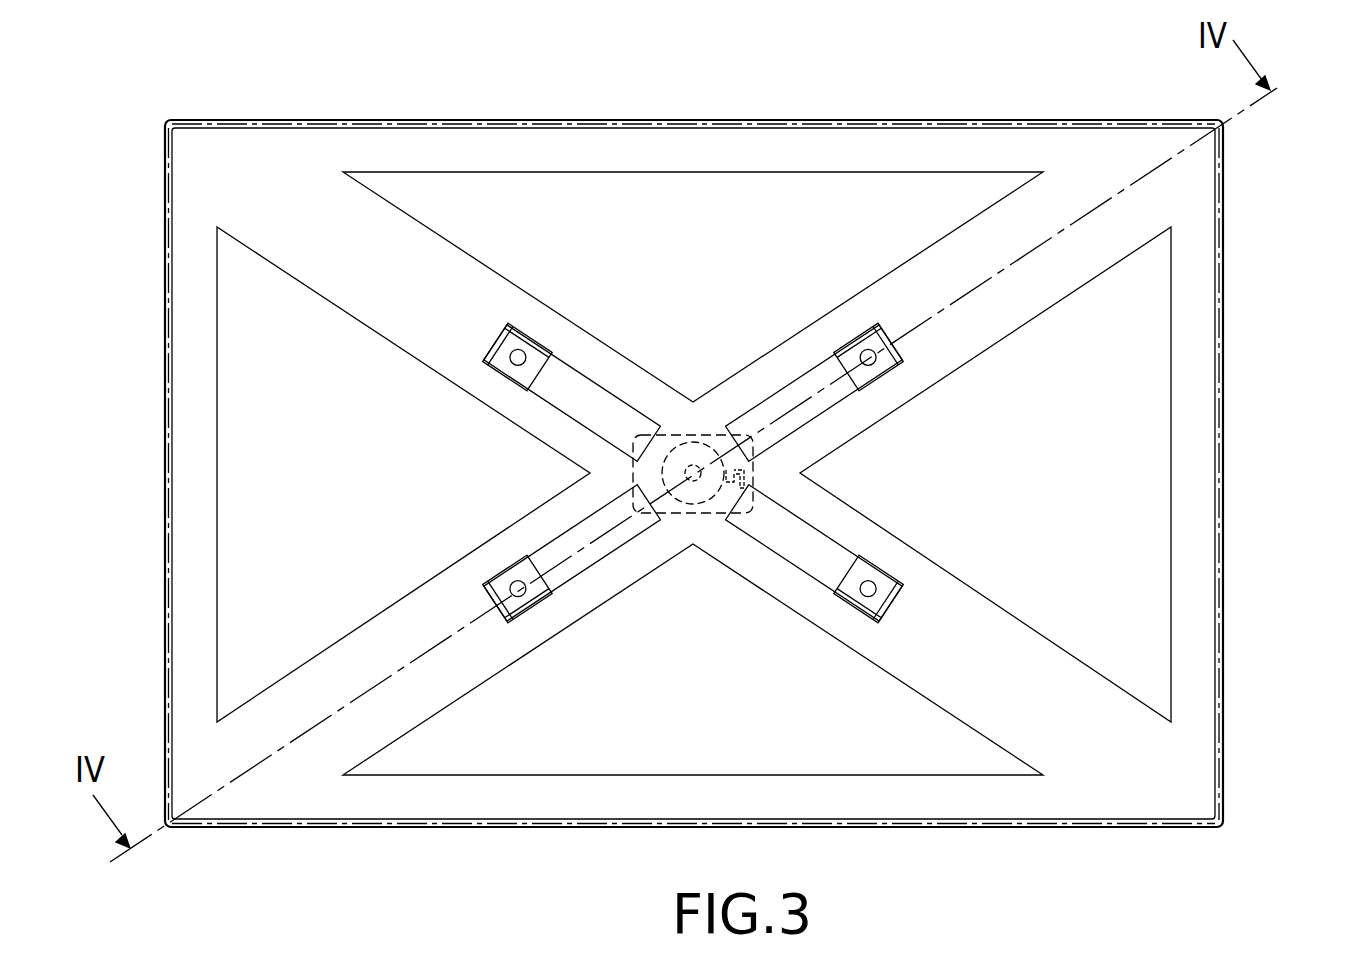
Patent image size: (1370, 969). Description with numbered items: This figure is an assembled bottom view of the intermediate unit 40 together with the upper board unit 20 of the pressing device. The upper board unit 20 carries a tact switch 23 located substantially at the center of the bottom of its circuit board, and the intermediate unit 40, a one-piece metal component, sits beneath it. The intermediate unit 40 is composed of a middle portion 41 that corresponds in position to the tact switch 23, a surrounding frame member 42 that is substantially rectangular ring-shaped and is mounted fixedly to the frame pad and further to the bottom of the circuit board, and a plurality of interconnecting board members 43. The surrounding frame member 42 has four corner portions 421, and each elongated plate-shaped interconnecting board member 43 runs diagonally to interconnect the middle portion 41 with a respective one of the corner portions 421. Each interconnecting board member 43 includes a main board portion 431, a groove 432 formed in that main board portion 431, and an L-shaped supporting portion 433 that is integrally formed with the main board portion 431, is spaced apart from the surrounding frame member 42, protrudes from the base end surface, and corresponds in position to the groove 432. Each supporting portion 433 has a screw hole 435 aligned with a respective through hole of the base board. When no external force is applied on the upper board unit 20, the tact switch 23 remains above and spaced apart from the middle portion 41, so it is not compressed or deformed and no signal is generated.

The upper board unit 20 is at (1222, 566).
The tact switch 23 is at (705, 505).
The intermediate unit 40 is at (832, 135).
The middle portion 41 is at (685, 420).
The surrounding frame member 42 is at (1197, 338).
The corner portions 421 is at (1202, 153).
The interconnecting board members 43 is at (785, 394).
The main board portion 431 is at (991, 235).
The groove 432 is at (787, 393).
The supporting portion 433 is at (871, 345).
The screw hole 435 is at (874, 361).